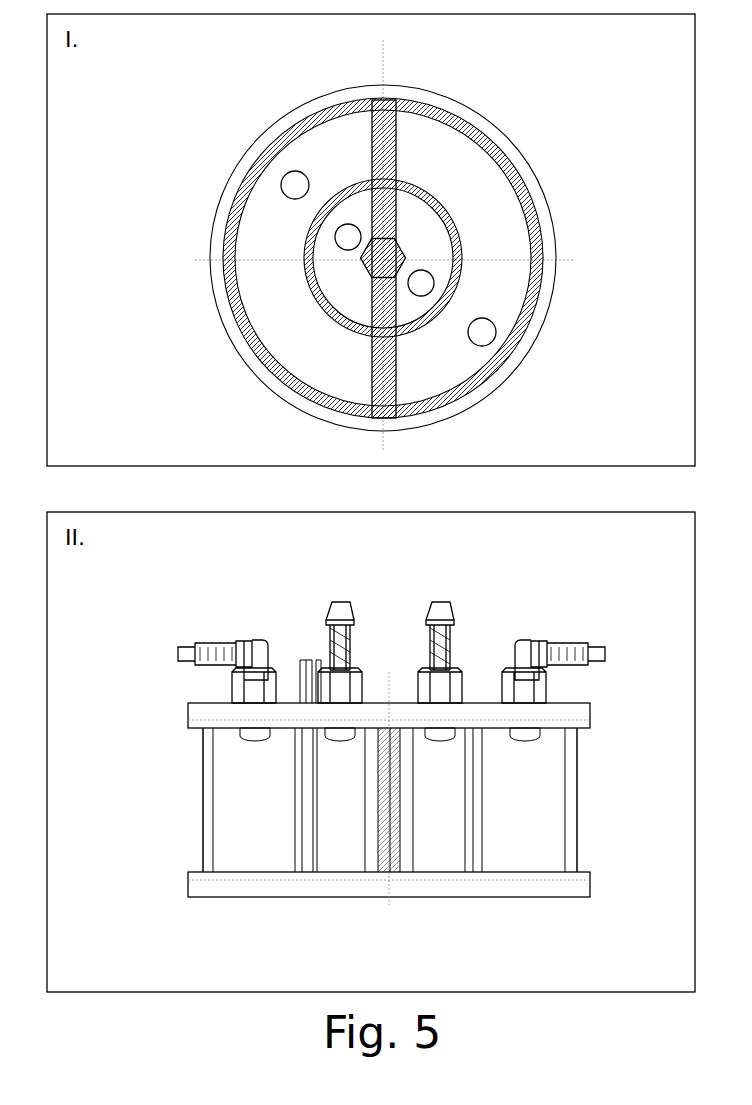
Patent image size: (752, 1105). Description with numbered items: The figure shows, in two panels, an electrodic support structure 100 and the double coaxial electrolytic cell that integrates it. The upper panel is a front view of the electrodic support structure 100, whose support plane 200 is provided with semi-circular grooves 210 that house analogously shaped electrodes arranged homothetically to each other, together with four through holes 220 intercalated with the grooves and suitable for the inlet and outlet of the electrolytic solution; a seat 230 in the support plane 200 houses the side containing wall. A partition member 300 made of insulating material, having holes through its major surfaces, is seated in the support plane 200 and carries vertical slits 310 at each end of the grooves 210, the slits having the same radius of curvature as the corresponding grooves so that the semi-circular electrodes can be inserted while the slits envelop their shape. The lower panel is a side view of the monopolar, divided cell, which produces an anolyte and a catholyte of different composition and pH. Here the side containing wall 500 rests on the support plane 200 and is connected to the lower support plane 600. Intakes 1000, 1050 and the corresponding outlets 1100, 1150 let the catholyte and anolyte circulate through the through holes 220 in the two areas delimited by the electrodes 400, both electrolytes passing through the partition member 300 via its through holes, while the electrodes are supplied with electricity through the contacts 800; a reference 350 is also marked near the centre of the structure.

The electrodic support structure 100 is at (180, 158).
The support plane 200 is at (550, 205).
The grooves 210 is at (440, 267).
The through holes 220 is at (496, 335).
The seat 230 is at (477, 122).
The partition member 300 is at (385, 125).
The vertical slits 310 is at (395, 345).
The shaft 350 is at (372, 280).
The electrodes 400 is at (483, 858).
The side containing wall 500 is at (577, 782).
The support plane 600 is at (590, 890).
The contacts 800 is at (295, 660).
The intake 1000 is at (337, 593).
The intake 1050 is at (215, 630).
The outlet 1100 is at (462, 593).
The outlet 1150 is at (567, 632).